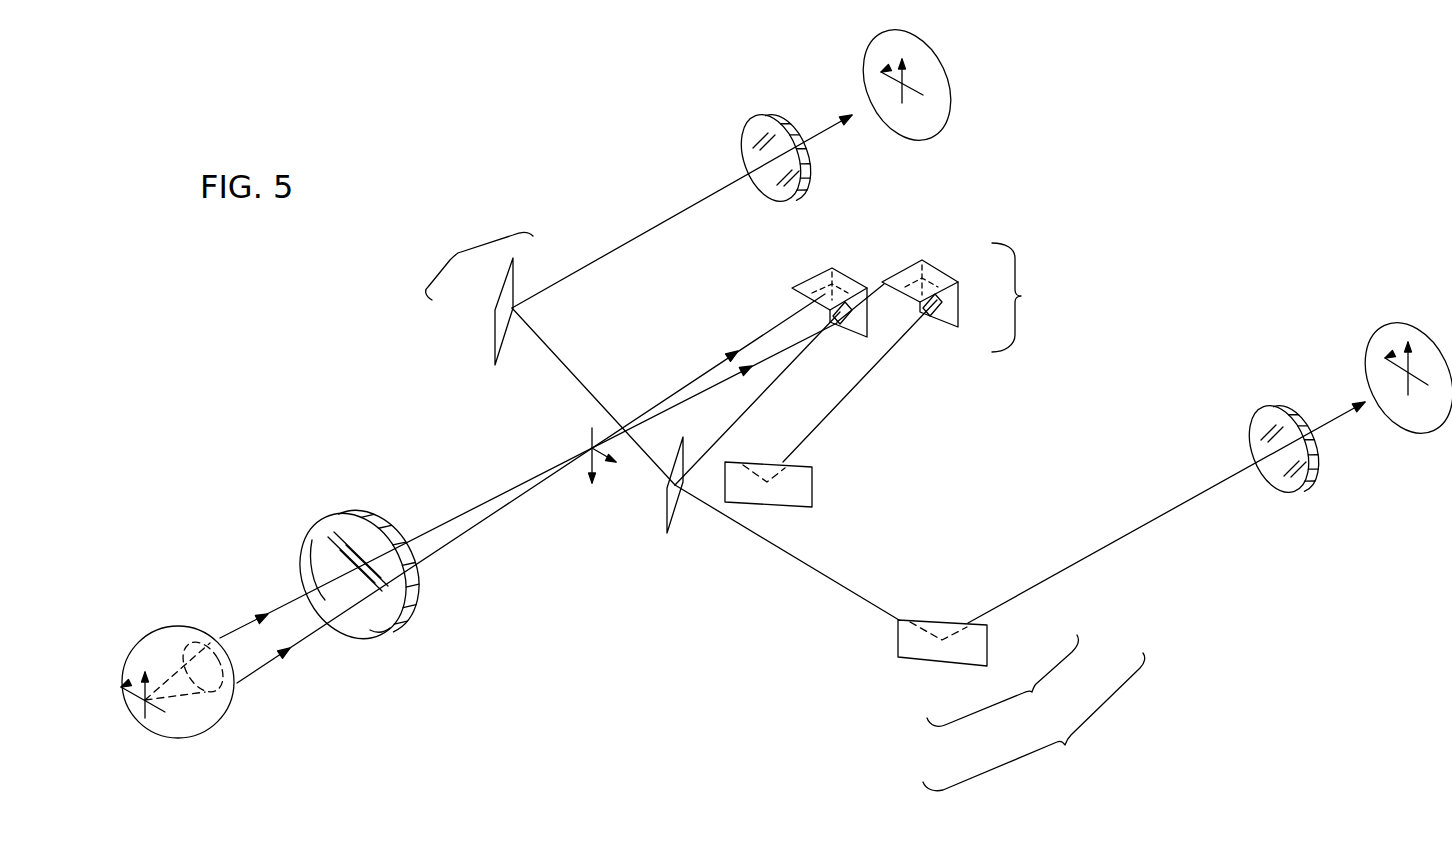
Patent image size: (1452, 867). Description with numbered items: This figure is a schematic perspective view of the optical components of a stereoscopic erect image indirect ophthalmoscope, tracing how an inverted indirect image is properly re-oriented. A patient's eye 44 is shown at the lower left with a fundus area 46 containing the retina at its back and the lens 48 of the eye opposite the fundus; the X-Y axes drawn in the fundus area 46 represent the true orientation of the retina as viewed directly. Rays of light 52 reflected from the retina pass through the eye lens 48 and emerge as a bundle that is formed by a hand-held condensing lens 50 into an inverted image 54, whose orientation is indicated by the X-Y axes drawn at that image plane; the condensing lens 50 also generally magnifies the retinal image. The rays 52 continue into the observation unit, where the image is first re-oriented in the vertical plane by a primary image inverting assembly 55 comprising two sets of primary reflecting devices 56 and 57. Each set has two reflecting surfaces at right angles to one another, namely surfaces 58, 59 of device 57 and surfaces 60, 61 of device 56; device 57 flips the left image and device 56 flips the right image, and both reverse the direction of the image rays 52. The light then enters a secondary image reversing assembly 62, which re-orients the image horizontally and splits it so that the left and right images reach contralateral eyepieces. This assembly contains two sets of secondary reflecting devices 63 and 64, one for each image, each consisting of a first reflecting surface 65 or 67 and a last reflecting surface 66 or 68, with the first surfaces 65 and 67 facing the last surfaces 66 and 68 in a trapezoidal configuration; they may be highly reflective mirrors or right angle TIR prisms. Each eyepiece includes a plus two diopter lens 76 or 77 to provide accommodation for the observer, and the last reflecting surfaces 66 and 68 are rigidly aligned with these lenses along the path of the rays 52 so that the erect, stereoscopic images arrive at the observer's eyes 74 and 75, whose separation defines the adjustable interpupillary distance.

The patient's eye 44 is at (175, 628).
The fundus area 46 is at (145, 702).
The lens of the eye 48 is at (218, 702).
The condensing lens 50 is at (362, 512).
The rays of light 52 is at (310, 637).
The inverted image 54 is at (587, 450).
The primary image inverting assembly 55 is at (1025, 297).
The primary reflecting device 56 is at (847, 272).
The primary reflecting device 57 is at (947, 272).
The reflecting surface 58 is at (947, 317).
The reflecting surface 59 is at (913, 268).
The reflecting surface 60 is at (857, 322).
The reflecting surface 61 is at (820, 280).
The secondary image reversing assembly 62 is at (1034, 722).
The set of secondary reflecting devices 63 is at (1002, 680).
The set of secondary reflecting devices 64 is at (477, 267).
The first reflecting surface 65 is at (670, 472).
The last reflecting surface 66 is at (985, 652).
The first reflecting surface 67 is at (807, 485).
The last reflecting surface 68 is at (500, 290).
The eye of the observer 74 is at (1402, 327).
The eye of the observer 75 is at (935, 73).
The +2.00 diopter lens 76 is at (1280, 423).
The +2.00 diopter lens 77 is at (770, 113).